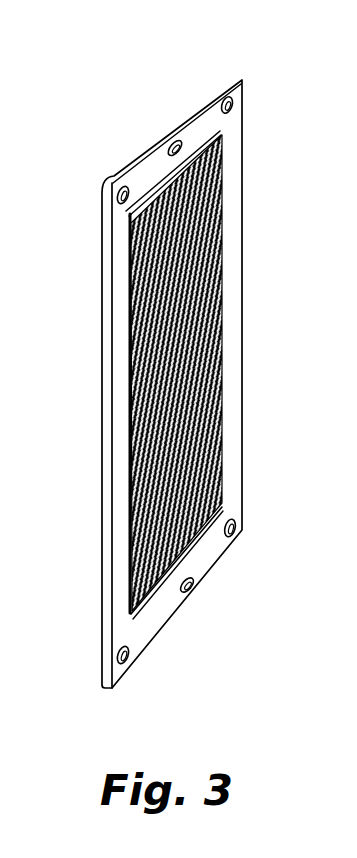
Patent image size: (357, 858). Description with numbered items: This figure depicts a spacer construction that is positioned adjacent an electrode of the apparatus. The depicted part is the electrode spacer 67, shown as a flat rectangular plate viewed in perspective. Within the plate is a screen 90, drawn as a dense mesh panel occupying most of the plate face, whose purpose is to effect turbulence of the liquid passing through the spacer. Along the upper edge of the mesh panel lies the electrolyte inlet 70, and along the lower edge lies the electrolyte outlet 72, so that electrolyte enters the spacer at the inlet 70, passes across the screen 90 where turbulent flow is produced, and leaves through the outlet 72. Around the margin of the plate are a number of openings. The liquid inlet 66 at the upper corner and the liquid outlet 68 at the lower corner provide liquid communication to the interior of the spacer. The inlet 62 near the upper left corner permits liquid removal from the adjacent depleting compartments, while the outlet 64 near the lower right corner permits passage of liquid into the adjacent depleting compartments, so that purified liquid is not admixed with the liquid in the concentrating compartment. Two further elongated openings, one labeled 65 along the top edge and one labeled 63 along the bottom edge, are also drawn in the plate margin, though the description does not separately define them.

The inlet 62 is at (116, 174).
The mounting slot 63 is at (190, 594).
The outlet 64 is at (231, 546).
The mounting slot 65 is at (171, 141).
The liquid inlet 66 is at (224, 89).
The electrode spacer 67 is at (244, 177).
The liquid outlet 68 is at (128, 664).
The electrolyte inlet 70 is at (222, 141).
The electrolyte outlet 72 is at (140, 606).
The screen 90 is at (130, 392).